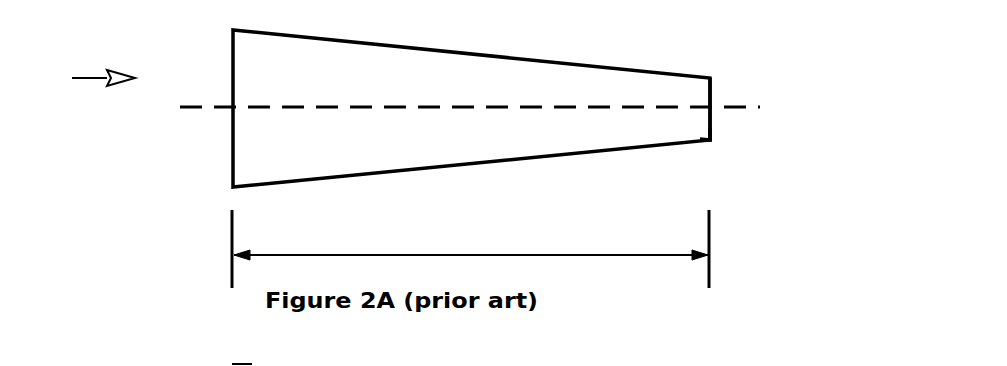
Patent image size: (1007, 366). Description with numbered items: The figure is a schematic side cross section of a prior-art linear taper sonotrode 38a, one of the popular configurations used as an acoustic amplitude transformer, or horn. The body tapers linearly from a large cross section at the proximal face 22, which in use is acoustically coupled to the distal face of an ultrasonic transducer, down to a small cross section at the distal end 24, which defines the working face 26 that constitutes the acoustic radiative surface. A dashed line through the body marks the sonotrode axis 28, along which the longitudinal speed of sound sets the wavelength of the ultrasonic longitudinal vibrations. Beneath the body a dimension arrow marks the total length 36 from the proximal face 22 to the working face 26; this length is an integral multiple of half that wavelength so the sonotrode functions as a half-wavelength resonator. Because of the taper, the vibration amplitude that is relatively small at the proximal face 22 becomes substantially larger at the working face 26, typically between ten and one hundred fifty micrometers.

The proximal face 22 is at (231, 136).
The distal end 24 is at (697, 126).
The working face 26 is at (711, 90).
The sonotrode axis 28 is at (192, 107).
The total length 36 is at (596, 255).
The linear taper sonotrode 38a is at (75, 79).